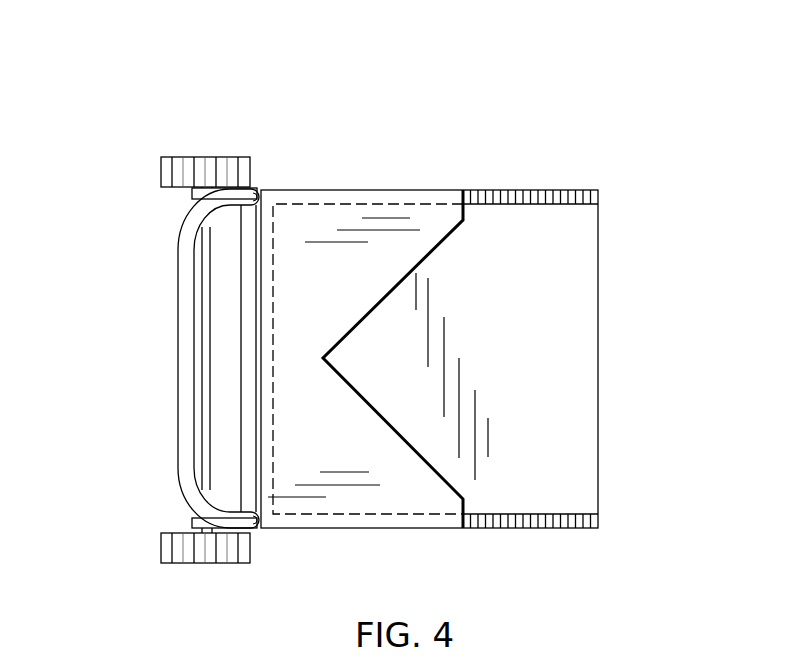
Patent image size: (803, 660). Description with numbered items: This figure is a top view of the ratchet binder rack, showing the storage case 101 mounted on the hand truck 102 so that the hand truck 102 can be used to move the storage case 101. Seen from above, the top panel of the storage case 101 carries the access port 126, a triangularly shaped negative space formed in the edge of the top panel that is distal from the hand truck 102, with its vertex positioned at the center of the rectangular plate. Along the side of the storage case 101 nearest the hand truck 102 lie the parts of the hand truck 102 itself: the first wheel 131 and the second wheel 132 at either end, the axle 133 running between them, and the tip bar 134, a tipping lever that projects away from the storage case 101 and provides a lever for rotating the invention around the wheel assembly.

The storage case 101 is at (355, 219).
The hand truck 102 is at (186, 245).
The access port 126 is at (383, 364).
The first wheel 131 is at (252, 165).
The second wheel 132 is at (252, 548).
The axle 133 is at (208, 362).
The tip bar 134 is at (193, 524).